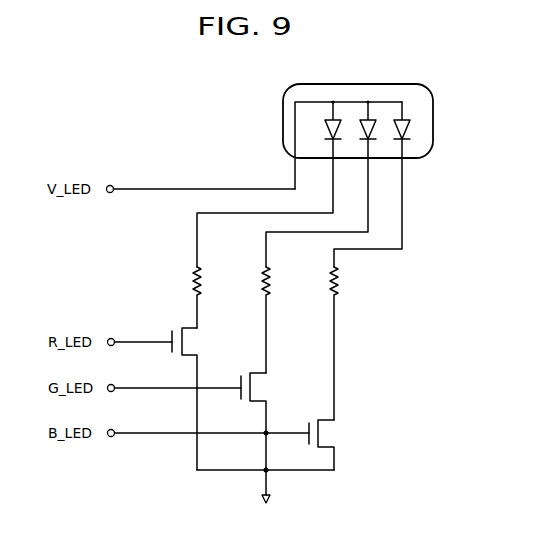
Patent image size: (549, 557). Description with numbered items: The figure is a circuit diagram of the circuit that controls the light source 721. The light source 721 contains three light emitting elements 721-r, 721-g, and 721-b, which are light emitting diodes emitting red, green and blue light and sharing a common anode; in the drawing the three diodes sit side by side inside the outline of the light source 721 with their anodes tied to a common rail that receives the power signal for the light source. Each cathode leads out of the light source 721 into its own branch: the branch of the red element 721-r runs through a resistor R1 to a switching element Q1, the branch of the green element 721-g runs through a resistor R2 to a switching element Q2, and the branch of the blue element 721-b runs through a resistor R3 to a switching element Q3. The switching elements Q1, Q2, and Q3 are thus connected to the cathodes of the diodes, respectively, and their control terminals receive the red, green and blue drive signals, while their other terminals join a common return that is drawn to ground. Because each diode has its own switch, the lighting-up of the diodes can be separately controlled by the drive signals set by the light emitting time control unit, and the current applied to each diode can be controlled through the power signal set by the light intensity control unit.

The light source 721 is at (283, 108).
The light emitting element 721-r is at (332, 119).
The light emitting element 721-g is at (367, 119).
The light emitting element 721-b is at (403, 119).
The resistor R1 is at (186, 297).
The resistor R2 is at (254, 320).
The resistor R3 is at (323, 343).
The switching element Q1 is at (193, 399).
The switching element Q2 is at (263, 434).
The switching element Q3 is at (330, 445).